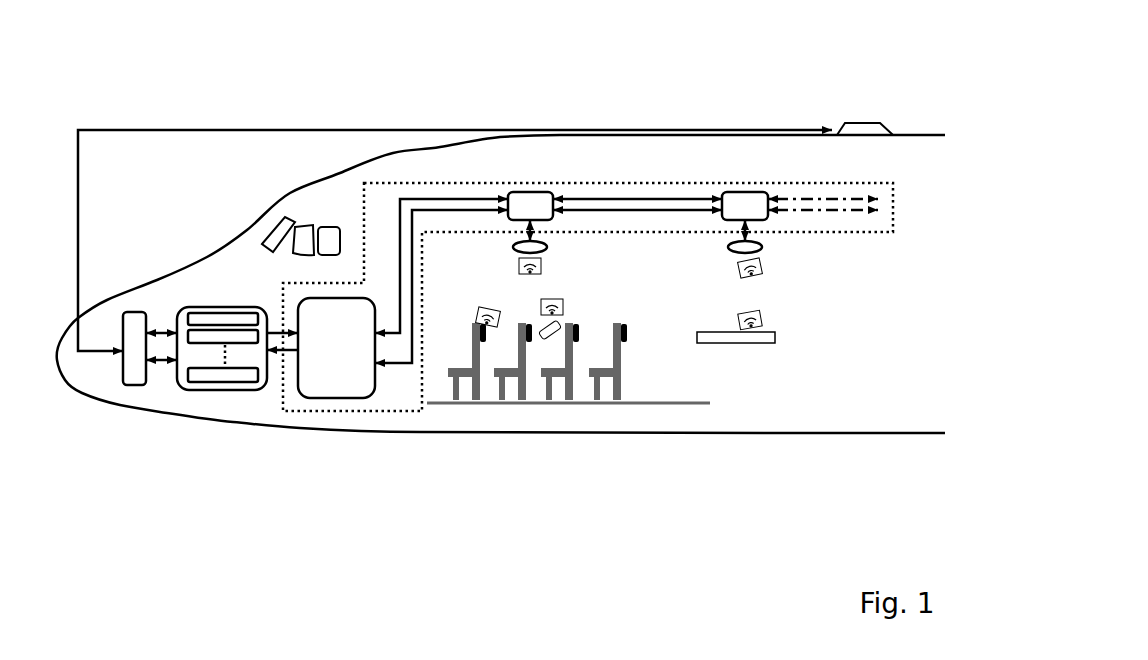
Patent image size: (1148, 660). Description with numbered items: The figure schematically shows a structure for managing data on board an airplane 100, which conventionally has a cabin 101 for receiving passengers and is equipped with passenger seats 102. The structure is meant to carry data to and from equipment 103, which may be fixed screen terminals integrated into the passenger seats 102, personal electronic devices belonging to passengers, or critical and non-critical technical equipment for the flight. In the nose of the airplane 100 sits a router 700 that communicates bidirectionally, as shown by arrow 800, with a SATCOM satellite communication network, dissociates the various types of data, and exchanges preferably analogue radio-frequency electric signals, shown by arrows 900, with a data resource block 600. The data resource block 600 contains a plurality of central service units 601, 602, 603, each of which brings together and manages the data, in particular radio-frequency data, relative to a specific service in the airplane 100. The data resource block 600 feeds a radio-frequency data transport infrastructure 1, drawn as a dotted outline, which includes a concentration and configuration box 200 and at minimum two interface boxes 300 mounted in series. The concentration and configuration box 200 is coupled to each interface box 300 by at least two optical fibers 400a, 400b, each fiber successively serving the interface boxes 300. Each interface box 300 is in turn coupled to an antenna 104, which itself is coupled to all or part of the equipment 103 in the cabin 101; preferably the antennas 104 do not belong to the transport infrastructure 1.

The radio-frequency data transport infrastructure 1 is at (808, 183).
The airplane 100 is at (395, 148).
The cabin 101 is at (703, 385).
The passenger seats 102 is at (513, 385).
The equipment 103 is at (482, 335).
The antenna 104 is at (722, 252).
The concentration and configuration box 200 is at (330, 399).
The interface boxes 300 is at (540, 192).
The optical fiber 400a is at (452, 197).
The optical fiber 400b is at (472, 208).
The data resource block 600 is at (186, 380).
The central service unit 601 is at (203, 317).
The central service unit 602 is at (193, 337).
The central service unit 603 is at (200, 381).
The router 700 is at (132, 388).
The arrow 800 is at (228, 130).
The arrows 900 is at (165, 337).